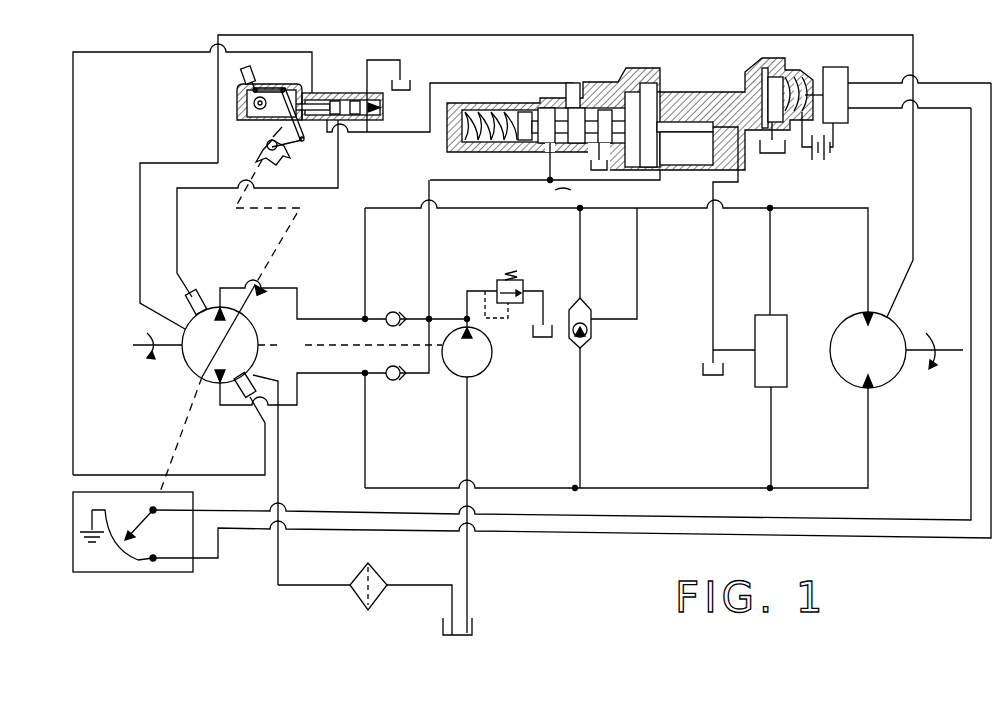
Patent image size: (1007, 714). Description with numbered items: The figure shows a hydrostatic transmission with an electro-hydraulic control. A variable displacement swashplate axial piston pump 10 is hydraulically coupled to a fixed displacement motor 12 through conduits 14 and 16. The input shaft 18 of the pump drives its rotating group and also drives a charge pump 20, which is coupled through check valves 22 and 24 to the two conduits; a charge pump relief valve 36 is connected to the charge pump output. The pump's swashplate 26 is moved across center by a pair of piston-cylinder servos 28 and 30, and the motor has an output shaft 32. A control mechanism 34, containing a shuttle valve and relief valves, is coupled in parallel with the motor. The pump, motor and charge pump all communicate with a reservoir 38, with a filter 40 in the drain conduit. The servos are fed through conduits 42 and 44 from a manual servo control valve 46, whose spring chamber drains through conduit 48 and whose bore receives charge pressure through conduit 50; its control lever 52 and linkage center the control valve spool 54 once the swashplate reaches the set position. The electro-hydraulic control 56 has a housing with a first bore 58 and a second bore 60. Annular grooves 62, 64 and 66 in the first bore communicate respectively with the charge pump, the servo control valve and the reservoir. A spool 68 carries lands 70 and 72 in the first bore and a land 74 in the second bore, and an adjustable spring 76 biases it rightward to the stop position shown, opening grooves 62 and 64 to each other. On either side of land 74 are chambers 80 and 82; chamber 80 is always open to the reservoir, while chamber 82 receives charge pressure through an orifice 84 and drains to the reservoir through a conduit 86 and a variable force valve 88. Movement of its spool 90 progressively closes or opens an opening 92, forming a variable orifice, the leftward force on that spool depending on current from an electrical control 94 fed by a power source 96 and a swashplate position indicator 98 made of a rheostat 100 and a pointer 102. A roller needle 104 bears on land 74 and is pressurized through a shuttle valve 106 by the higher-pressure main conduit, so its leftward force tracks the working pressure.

The variable displacement swashplate axial piston pump 10 is at (178, 374).
The fixed displacement motor 12 is at (895, 322).
The conduit 14 is at (815, 208).
The conduit 16 is at (828, 490).
The input shaft 18 is at (143, 338).
The charge pump 20 is at (489, 366).
The check valve 22 is at (408, 292).
The check valve 24 is at (398, 380).
The swashplate 26 is at (238, 400).
The piston-cylinder servo 28 is at (203, 296).
The piston-cylinder servo 30 is at (350, 349).
The output shaft 32 is at (953, 352).
The control mechanism 34 is at (787, 372).
The charge pump relief valve 36 is at (520, 280).
The reservoir 38 is at (478, 625).
The filter 40 is at (387, 556).
The conduit 42 is at (178, 232).
The conduit 44 is at (100, 475).
The manual servo control valve 46 is at (330, 93).
The conduit 48 is at (400, 57).
The conduit 50 is at (393, 134).
The control lever 52 is at (272, 60).
The control valve spool 54 is at (306, 128).
The electro-hydraulic control 56 is at (719, 120).
The first bore 58 is at (645, 83).
The second bore 60 is at (632, 168).
The annular groove 62 is at (548, 147).
The annular groove 64 is at (582, 72).
The annular groove 66 is at (605, 85).
The spool 68 is at (547, 118).
The land 70 is at (525, 112).
The land 72 is at (576, 143).
The land 74 is at (668, 152).
The adjustable spring 76 is at (482, 141).
The chamber 80 is at (665, 138).
The chamber 82 is at (668, 108).
The orifice 84 is at (562, 190).
The conduit 86 is at (702, 92).
The variable force valve 88 is at (788, 78).
The spool 90 is at (835, 118).
The opening 92 is at (768, 120).
The electrical control 94 is at (848, 75).
The power source 96 is at (832, 162).
The swashplate position indicator 98 is at (175, 572).
The rheostat 100 is at (138, 558).
The pointer 102 is at (153, 512).
The roller needle 104 is at (735, 130).
The shuttle valve 106 is at (594, 333).